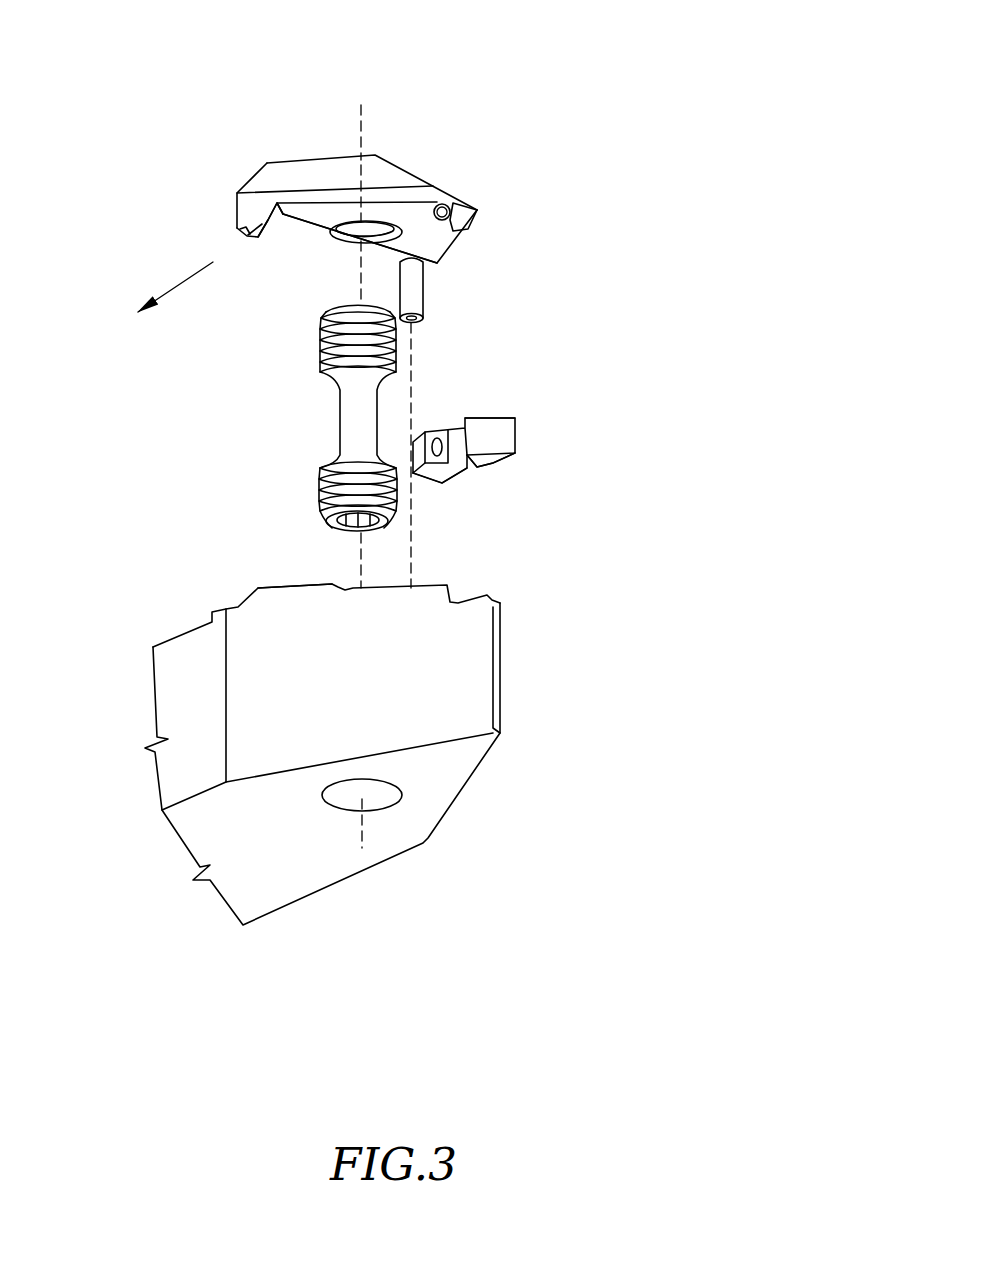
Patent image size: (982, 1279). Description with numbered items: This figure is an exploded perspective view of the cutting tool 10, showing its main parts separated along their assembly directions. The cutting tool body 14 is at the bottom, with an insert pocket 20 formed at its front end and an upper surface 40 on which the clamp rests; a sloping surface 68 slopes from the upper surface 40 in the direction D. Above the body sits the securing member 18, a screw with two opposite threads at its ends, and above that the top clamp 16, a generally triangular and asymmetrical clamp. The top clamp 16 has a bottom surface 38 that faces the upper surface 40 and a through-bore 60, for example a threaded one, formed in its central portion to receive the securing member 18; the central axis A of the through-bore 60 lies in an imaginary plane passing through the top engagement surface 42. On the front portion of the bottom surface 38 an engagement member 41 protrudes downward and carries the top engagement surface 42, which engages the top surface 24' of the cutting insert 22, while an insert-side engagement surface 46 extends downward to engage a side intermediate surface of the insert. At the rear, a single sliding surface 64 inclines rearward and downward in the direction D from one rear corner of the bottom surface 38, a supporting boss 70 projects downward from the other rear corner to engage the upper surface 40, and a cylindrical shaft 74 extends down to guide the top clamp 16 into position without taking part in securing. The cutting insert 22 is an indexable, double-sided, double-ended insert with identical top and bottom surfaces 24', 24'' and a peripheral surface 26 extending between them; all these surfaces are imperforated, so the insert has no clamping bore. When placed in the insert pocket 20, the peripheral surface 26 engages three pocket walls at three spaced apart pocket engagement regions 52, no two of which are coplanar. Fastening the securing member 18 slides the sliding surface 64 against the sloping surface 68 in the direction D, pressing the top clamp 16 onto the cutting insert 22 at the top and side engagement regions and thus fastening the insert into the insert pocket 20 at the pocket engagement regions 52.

The cutting tool 10 is at (690, 318).
The cutting tool body 14 is at (540, 752).
The top clamp 16 is at (258, 157).
The securing member 18 is at (353, 437).
The insert pocket 20 is at (480, 587).
The cutting insert 22 is at (547, 437).
The top surface 24' is at (543, 396).
The bottom surface 24'' is at (553, 483).
The peripheral surface 26 is at (465, 452).
The bottom surface 38 is at (298, 222).
The upper surface 40 is at (280, 575).
The engagement member 41 is at (456, 210).
The top engagement surface 42 is at (444, 203).
The insert-side engagement surface 46 is at (484, 219).
The pocket engagement regions 52 is at (437, 440).
The through-bore 60 is at (357, 243).
The sliding surface 64 is at (272, 223).
The sloping surface 68 is at (250, 597).
The supporting boss 70 is at (425, 268).
The shaft 74 is at (411, 305).
The central axis A is at (382, 328).
The direction D is at (165, 297).